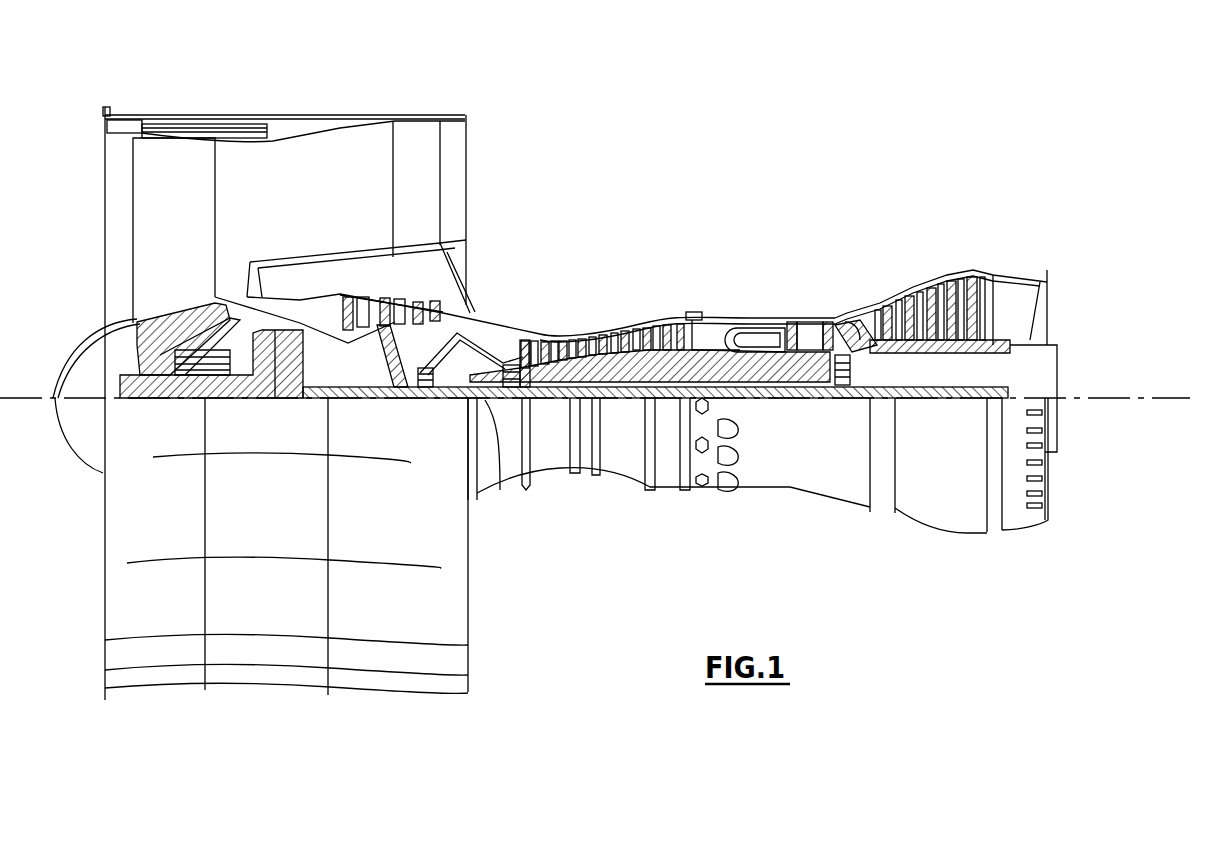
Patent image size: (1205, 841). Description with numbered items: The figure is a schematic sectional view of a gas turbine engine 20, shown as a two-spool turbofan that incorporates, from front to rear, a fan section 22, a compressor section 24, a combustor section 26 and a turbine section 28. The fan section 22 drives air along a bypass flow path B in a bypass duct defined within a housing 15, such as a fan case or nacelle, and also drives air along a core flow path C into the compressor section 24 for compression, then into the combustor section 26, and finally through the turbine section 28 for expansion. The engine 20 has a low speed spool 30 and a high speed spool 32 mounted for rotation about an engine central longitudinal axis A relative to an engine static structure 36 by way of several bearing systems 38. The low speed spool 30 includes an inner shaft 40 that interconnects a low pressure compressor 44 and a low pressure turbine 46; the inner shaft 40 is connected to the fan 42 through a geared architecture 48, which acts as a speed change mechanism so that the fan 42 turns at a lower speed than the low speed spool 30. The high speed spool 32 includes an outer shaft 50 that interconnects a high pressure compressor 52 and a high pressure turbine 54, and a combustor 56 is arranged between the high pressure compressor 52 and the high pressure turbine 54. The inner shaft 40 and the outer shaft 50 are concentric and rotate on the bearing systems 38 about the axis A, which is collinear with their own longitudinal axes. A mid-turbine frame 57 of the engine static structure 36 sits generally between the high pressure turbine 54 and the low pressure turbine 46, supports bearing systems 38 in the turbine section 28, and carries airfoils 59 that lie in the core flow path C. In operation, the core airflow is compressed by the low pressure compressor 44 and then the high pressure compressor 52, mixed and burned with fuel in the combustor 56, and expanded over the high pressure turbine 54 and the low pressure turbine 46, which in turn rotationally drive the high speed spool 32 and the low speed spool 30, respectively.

The housing 15 is at (287, 121).
The gas turbine engine 20 is at (748, 162).
The fan section 22 is at (213, 103).
The compressor section 24 is at (678, 312).
The combustor section 26 is at (760, 294).
The turbine section 28 is at (946, 365).
The low speed spool 30 is at (626, 408).
The high speed spool 32 is at (672, 343).
The engine static structure 36 is at (665, 494).
The bearing systems 38 is at (423, 380).
The inner shaft 40 is at (490, 413).
The fan 42 is at (160, 246).
The low pressure compressor 44 is at (392, 310).
The low pressure turbine 46 is at (935, 281).
The geared architecture 48 is at (295, 384).
The outer shaft 50 is at (750, 391).
The high pressure compressor 52 is at (605, 333).
The high pressure turbine 54 is at (812, 322).
The combustor 56 is at (745, 339).
The mid-turbine frame 57 is at (851, 304).
The airfoils 59 is at (856, 336).
The engine central longitudinal axis A is at (1140, 398).
The bypass flow path B is at (240, 193).
The core flow path C is at (282, 294).